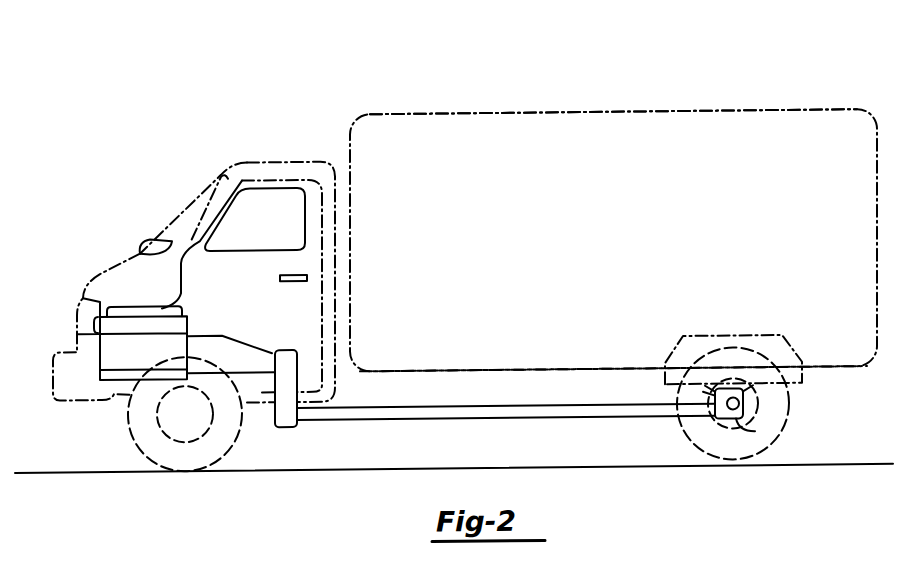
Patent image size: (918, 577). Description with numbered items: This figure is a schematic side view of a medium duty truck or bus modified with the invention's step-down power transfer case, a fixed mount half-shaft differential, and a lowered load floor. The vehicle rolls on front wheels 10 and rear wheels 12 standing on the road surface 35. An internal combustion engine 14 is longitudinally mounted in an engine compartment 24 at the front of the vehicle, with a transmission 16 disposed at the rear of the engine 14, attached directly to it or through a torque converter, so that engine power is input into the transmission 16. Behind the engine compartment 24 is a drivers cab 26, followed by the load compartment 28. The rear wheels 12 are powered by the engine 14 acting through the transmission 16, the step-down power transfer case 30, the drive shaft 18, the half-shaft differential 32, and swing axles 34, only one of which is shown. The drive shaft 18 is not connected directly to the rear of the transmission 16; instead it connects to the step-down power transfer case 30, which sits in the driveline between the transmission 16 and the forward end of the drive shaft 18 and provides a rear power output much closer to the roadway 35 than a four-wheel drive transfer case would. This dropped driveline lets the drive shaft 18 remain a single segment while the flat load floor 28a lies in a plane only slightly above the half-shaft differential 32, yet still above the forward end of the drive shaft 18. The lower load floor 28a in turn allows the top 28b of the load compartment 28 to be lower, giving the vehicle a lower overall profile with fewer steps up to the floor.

The front wheels 10 is at (212, 478).
The rear wheels 12 is at (697, 454).
The internal combustion engine 14 is at (150, 325).
The transmission 16 is at (225, 339).
The drive shaft 18 is at (402, 412).
The engine compartment 24 is at (118, 282).
The drivers cab 26 is at (258, 174).
The load compartment 28 is at (462, 148).
The load floor 28a is at (433, 370).
The top 28b is at (605, 113).
The step-down power transfer case 30 is at (285, 426).
The half-shaft differential 32 is at (743, 403).
The swing axles 34 is at (755, 436).
The road surface 35 is at (122, 475).